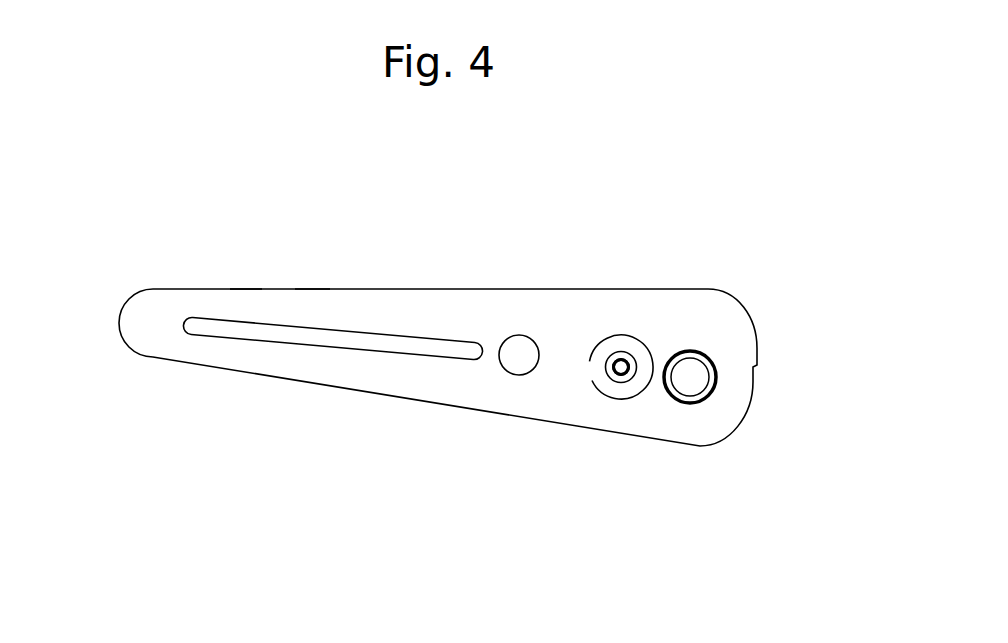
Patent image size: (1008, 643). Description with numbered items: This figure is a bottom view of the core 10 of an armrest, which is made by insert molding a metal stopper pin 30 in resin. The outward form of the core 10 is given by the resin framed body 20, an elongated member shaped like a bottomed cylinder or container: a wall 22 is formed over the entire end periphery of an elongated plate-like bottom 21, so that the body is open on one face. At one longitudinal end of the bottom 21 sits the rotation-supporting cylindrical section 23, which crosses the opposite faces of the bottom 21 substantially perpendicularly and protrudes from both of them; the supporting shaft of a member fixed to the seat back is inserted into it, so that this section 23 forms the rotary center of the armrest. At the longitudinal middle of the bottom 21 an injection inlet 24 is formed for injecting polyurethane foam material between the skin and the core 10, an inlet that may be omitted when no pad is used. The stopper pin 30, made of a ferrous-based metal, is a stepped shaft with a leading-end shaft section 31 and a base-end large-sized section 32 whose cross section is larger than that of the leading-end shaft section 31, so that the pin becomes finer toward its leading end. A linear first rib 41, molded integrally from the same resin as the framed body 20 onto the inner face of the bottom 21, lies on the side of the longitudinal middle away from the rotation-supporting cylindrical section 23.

The core 10 is at (748, 300).
The framed body 20 is at (208, 288).
The bottom 21 is at (312, 312).
The wall 22 is at (247, 290).
The rotation-supporting cylindrical section 23 is at (690, 351).
The injection inlet 24 is at (522, 340).
The stopper pin 30 is at (570, 503).
The leading-end shaft section 31 is at (620, 376).
The base-end large-sized section 32 is at (604, 382).
The first rib 41 is at (403, 349).